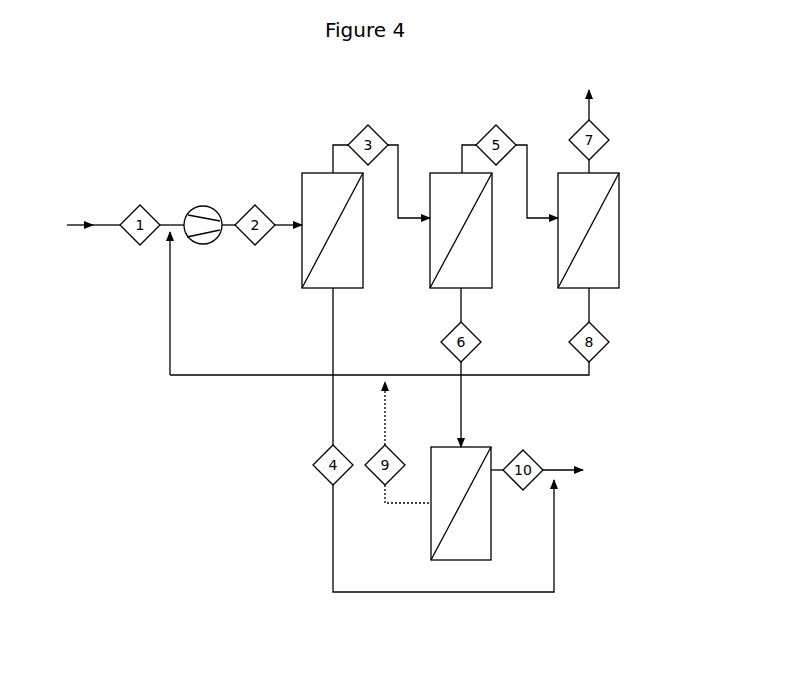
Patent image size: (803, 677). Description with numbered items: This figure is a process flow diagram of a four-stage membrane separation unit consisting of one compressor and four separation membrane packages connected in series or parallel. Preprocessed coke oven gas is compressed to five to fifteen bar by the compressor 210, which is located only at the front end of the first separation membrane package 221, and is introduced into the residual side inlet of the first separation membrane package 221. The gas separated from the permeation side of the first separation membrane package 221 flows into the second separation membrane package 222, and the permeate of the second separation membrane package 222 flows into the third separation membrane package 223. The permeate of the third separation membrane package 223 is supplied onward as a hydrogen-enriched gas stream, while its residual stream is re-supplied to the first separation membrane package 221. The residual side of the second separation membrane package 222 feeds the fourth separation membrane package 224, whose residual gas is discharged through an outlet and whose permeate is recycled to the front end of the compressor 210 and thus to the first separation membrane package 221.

The compressor 210 is at (202, 205).
The first separation membrane package 221 is at (308, 172).
The second separation membrane package 222 is at (437, 172).
The third separation membrane package 223 is at (608, 172).
The fourth separation membrane package 224 is at (440, 446).